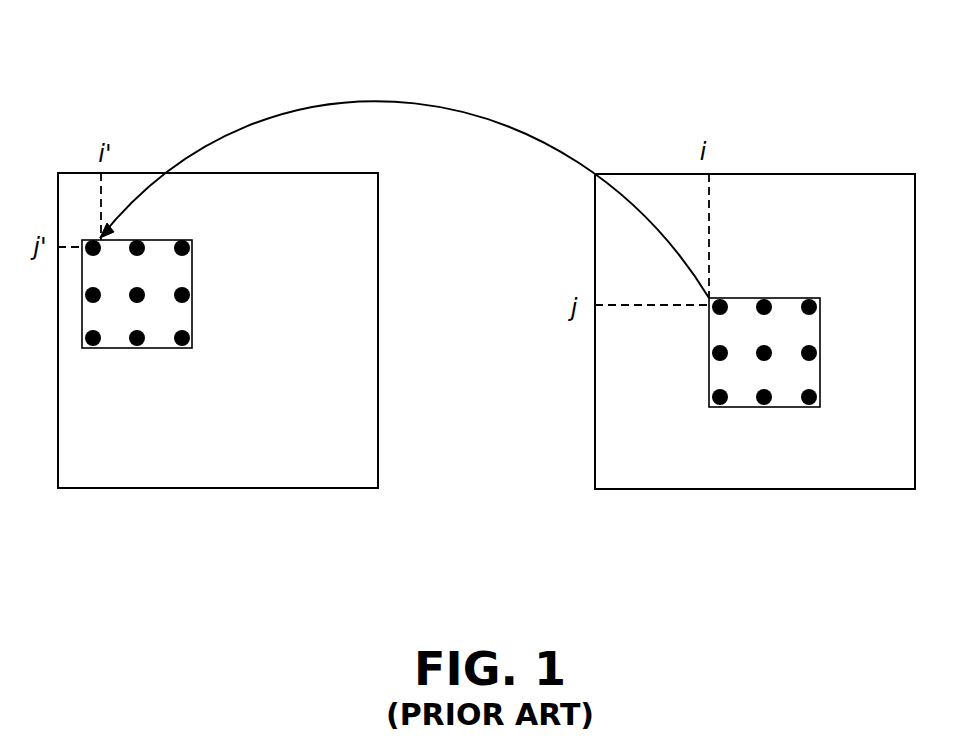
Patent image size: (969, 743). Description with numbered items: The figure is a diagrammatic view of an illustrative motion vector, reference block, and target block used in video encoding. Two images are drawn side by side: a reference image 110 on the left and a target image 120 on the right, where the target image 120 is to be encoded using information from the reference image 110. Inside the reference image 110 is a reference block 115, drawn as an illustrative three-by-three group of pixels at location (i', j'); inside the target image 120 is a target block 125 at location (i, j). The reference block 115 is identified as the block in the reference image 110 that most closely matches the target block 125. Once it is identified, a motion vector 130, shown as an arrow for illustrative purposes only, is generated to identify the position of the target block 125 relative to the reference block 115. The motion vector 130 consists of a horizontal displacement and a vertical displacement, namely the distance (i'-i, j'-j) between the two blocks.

The reference image 110 is at (142, 488).
The reference block 115 is at (150, 348).
The target image 120 is at (715, 489).
The target block 125 is at (777, 407).
The motion vector 130 is at (367, 100).